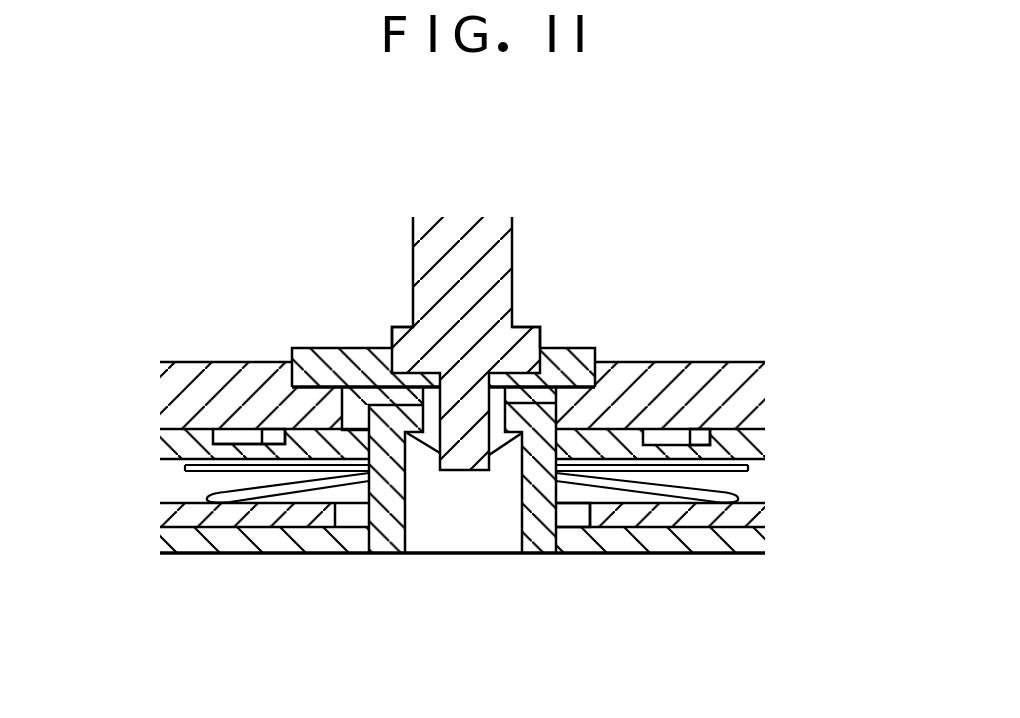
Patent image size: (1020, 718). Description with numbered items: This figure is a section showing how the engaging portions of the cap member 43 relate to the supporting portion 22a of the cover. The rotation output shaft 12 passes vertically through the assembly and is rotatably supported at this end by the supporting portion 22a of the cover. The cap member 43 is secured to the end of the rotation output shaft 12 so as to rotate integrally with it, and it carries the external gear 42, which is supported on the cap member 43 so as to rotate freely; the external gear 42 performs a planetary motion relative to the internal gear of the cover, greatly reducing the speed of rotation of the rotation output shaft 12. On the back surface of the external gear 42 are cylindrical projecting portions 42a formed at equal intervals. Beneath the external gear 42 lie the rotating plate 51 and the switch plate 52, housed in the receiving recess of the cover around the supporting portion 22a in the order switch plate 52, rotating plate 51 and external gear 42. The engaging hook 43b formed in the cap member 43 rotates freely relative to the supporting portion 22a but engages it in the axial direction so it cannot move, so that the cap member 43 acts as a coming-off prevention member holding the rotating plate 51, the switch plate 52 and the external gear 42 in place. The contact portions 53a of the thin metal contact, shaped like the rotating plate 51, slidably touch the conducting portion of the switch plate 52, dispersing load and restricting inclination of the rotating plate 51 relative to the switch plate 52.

The rotation output shaft 12 is at (498, 290).
The cap member 43 is at (565, 365).
The engaging hook 43b is at (419, 436).
The external gear 42 is at (725, 385).
The cylindrical projecting portions 42a is at (677, 438).
The rotating plate 51 is at (187, 443).
The contact portions 53a is at (722, 496).
The switch plate 52 is at (735, 515).
The supporting portion 22a is at (543, 487).